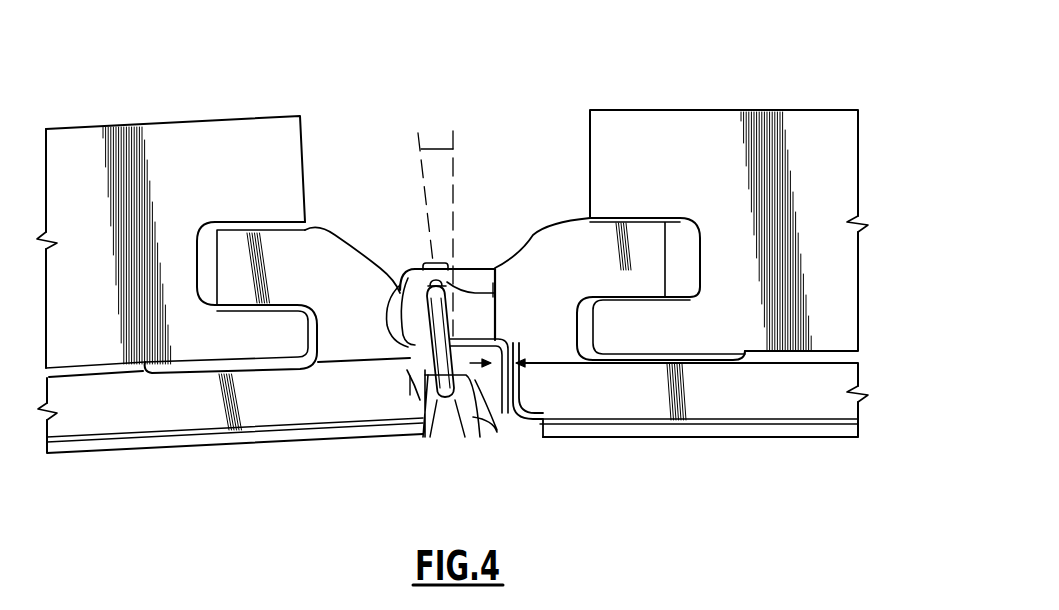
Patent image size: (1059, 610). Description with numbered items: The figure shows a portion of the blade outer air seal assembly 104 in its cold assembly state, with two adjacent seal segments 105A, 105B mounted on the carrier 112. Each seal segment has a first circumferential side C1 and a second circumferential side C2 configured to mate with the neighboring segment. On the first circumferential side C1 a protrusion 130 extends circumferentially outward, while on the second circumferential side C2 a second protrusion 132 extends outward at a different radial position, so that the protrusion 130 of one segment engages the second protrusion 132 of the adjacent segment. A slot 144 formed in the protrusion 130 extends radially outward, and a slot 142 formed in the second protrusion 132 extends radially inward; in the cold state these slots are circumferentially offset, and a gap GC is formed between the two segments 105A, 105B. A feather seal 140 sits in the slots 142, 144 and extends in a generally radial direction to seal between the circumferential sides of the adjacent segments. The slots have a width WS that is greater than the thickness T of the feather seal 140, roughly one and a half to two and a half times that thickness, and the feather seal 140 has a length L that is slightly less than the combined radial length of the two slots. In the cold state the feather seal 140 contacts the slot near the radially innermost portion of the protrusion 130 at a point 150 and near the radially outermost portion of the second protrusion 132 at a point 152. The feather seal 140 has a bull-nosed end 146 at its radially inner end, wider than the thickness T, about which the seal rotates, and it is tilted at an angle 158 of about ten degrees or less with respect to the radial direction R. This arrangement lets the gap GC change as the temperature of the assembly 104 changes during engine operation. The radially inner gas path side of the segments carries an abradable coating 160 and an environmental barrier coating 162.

The BOAS assembly 104 is at (706, 66).
The carrier 112 is at (623, 147).
The seal segment 105A is at (705, 400).
The seal segment 105B is at (147, 418).
The protrusion 130 is at (475, 268).
The second protrusion 132 is at (453, 410).
The feather seal 140 is at (468, 383).
The slot 142 is at (430, 383).
The slot 144 is at (412, 263).
The bull-nosed end 146 is at (440, 397).
The point 150 is at (455, 328).
The point 152 is at (410, 350).
The angle 158 is at (436, 149).
The abradable coating 160 is at (287, 443).
The environmental barrier coating 162 is at (607, 420).
The radial direction R is at (454, 218).
The slot width WS is at (428, 262).
The thickness T is at (493, 291).
The gap GC is at (505, 343).
The first circumferential side C1 is at (398, 283).
The second circumferential side C2 is at (518, 381).
The length L is at (410, 376).